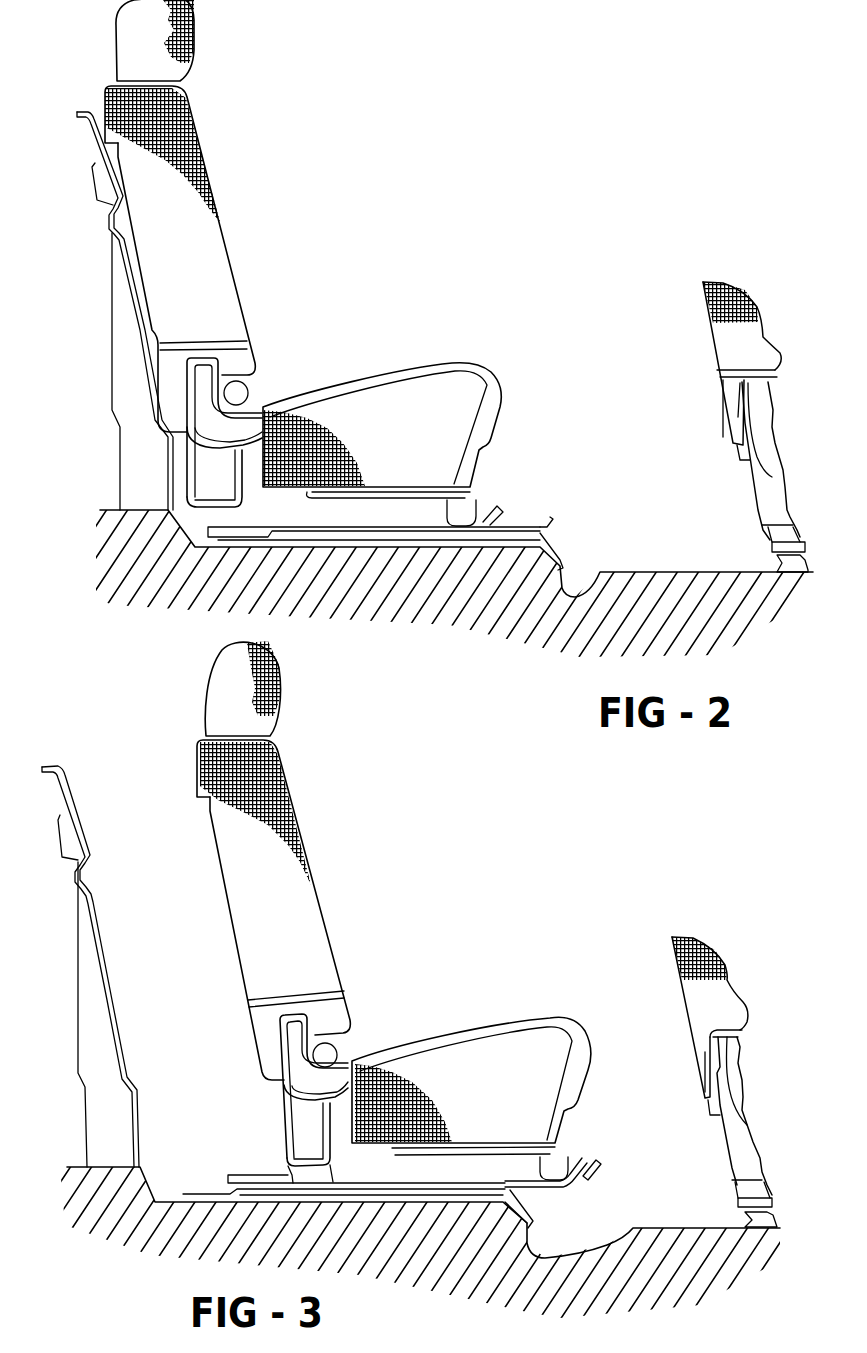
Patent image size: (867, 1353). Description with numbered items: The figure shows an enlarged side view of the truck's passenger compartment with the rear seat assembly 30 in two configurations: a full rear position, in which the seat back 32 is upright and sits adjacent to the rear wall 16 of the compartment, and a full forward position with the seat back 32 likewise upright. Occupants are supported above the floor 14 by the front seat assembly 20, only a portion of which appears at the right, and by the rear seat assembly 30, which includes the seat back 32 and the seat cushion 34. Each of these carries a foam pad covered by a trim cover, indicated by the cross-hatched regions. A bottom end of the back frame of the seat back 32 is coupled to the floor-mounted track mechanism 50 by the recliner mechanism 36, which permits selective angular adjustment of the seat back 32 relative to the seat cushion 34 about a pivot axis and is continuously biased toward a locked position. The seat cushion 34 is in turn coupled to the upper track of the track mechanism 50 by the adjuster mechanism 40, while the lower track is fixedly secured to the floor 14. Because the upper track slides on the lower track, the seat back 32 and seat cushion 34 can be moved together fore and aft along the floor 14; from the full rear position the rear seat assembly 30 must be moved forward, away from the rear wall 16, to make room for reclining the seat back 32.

In FIG. 2, the floor 14 is at (604, 576).
In FIG. 3, the floor 14 is at (620, 1239).
In FIG. 2, the rear wall 16 is at (118, 255).
In FIG. 3, the rear wall 16 is at (95, 907).
In FIG. 2, the front seat assembly 20 is at (727, 360).
In FIG. 3, the front seat assembly 20 is at (681, 993).
In FIG. 2, the rear seat assembly 30 is at (342, 204).
In FIG. 3, the rear seat assembly 30 is at (411, 831).
In FIG. 2, the seat back 32 is at (210, 245).
In FIG. 3, the seat back 32 is at (287, 820).
In FIG. 2, the seat cushion 34 is at (411, 392).
In FIG. 3, the seat cushion 34 is at (512, 1042).
In FIG. 2, the recliner mechanism 36 is at (232, 400).
In FIG. 3, the recliner mechanism 36 is at (338, 1058).
In FIG. 2, the adjuster mechanism 40 is at (450, 512).
In FIG. 3, the adjuster mechanism 40 is at (545, 1167).
In FIG. 2, the track mechanism 50 is at (544, 528).
In FIG. 3, the track mechanism 50 is at (510, 1194).